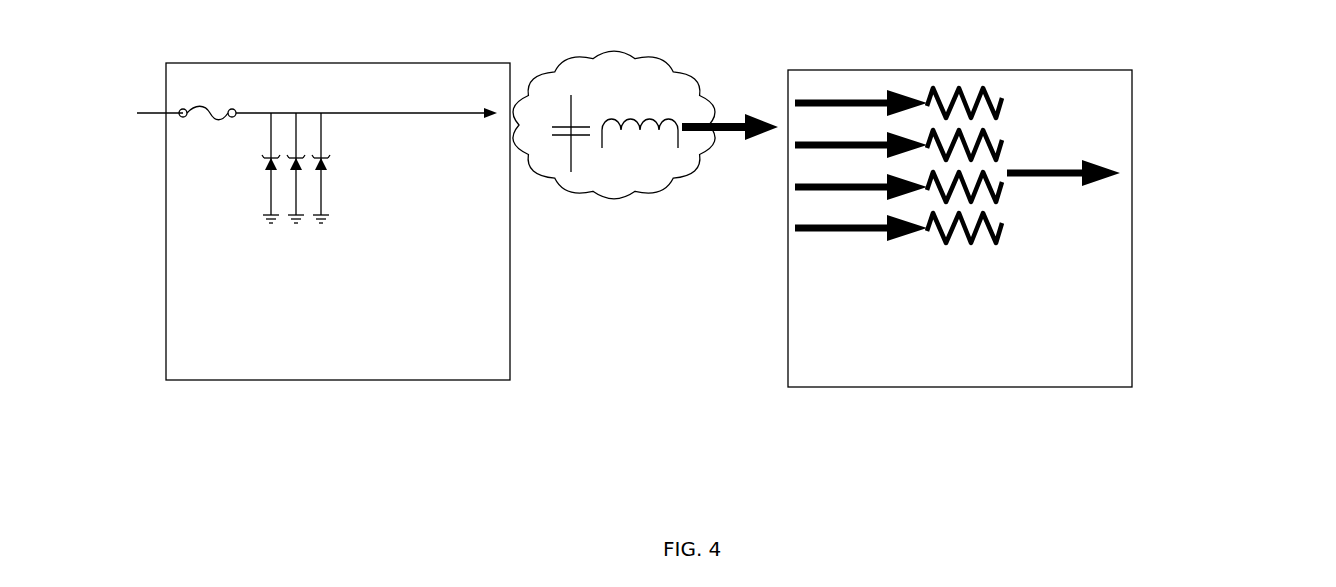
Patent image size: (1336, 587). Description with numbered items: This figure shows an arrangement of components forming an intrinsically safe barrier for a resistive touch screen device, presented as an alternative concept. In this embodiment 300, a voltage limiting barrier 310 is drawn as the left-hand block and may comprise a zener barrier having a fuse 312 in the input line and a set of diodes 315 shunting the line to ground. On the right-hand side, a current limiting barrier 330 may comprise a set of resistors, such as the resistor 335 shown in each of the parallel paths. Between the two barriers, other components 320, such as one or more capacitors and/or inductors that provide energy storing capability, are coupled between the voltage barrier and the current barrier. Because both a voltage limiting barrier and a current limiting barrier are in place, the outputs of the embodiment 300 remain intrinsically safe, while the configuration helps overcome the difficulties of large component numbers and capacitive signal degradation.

The embodiment 300 is at (1230, 102).
The voltage limiting barrier 310 is at (152, 265).
The fuse 312 is at (205, 92).
The diodes 315 is at (343, 180).
The other components 320 is at (624, 212).
The current limiting barrier 330 is at (1142, 250).
The resistor 335 is at (958, 253).